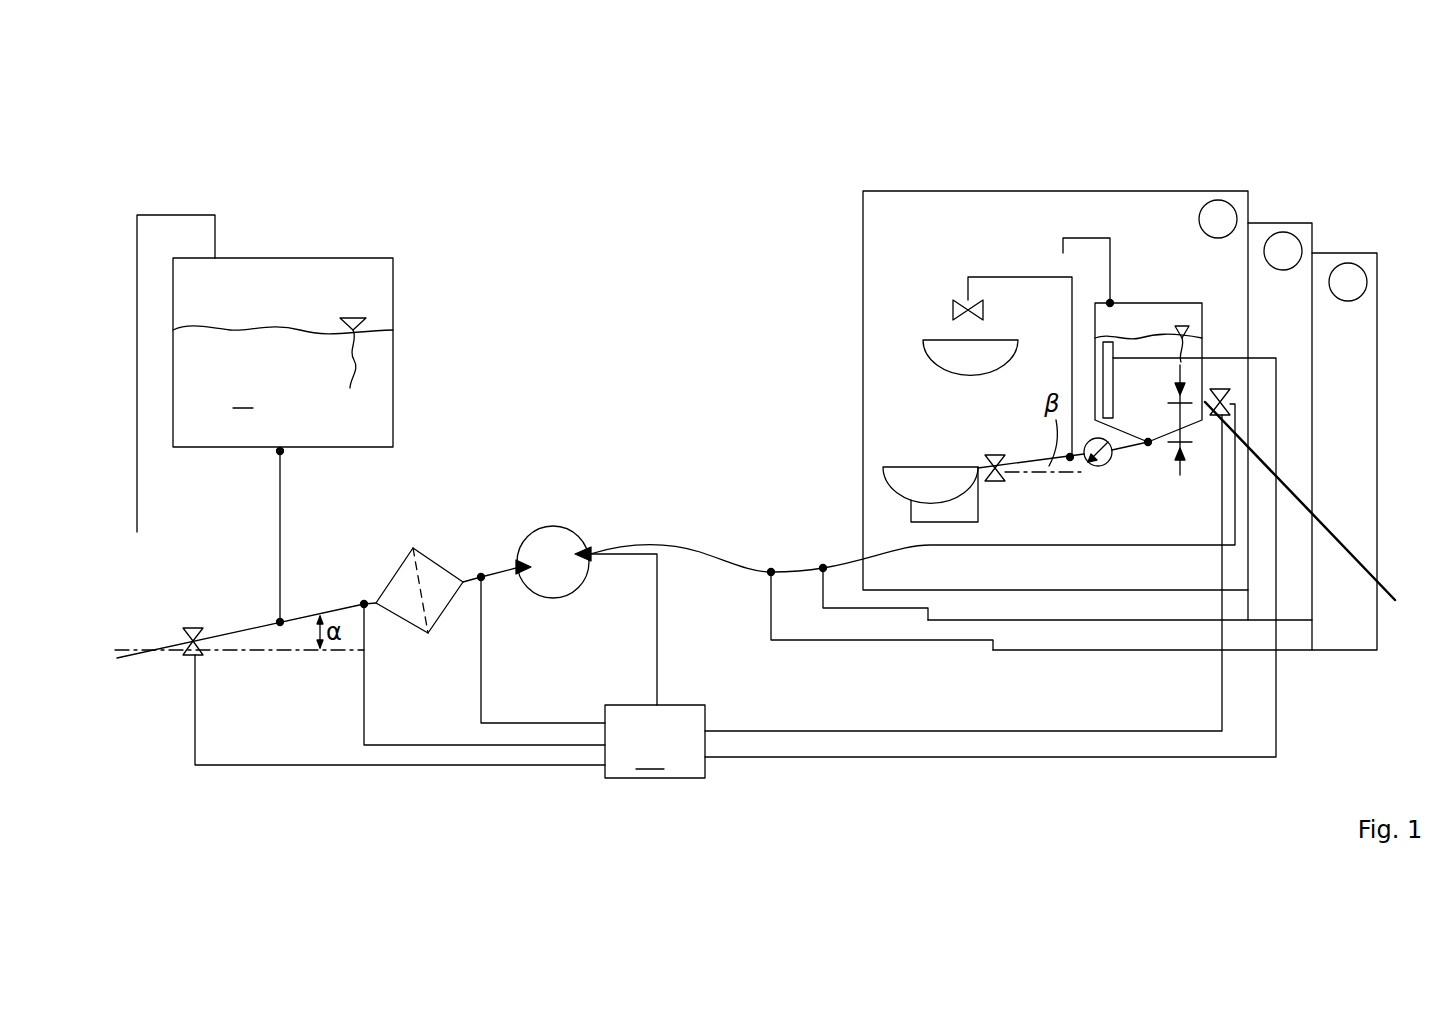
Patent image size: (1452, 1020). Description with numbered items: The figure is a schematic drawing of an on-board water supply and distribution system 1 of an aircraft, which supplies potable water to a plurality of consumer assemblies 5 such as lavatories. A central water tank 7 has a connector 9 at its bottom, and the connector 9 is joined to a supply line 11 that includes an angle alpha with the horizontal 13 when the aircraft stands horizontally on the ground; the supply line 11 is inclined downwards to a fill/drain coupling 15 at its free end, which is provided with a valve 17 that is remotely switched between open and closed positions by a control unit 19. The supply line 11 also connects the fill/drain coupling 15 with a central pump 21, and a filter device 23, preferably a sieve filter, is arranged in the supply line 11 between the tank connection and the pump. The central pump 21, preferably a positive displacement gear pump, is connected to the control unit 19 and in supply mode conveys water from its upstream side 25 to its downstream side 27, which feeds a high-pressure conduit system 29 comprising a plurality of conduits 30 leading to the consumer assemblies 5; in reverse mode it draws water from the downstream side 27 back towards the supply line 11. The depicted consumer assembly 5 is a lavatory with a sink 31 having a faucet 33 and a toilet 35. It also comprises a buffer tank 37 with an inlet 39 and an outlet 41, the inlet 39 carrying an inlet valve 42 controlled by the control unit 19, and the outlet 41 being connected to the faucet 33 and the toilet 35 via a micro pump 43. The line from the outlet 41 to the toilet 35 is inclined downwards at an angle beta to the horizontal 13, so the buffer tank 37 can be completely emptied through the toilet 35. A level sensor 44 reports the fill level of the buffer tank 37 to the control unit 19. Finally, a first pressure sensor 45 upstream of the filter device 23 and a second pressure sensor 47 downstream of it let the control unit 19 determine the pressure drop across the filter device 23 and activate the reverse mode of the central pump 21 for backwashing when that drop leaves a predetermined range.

The water supply and distribution system 1 is at (629, 182).
The consumer assembly 5 is at (1195, 190).
The central water tank 7 is at (283, 352).
The connector 9 is at (283, 453).
The supply line 11 is at (297, 618).
The horizontal 13 is at (128, 648).
The fill/drain coupling 15 is at (212, 637).
The valve 17 is at (190, 630).
The control unit 19 is at (940, 568).
The central pump 21 is at (553, 540).
The filter device 23 is at (436, 562).
The upstream side 25 is at (518, 565).
The downstream side 27 is at (592, 554).
The high-pressure conduit system 29 is at (750, 588).
The conduits 30 is at (845, 608).
The sink 31 is at (930, 346).
The faucet 33 is at (966, 298).
The toilet 35 is at (900, 480).
The buffer tank 37 is at (1183, 317).
The inlet 39 is at (1323, 519).
The outlet 41 is at (1150, 446).
The inlet valve 42 is at (1232, 408).
The micro pump 43 is at (1100, 468).
The level sensor 44 is at (1117, 352).
The first pressure sensor 45 is at (366, 600).
The second pressure sensor 47 is at (483, 580).